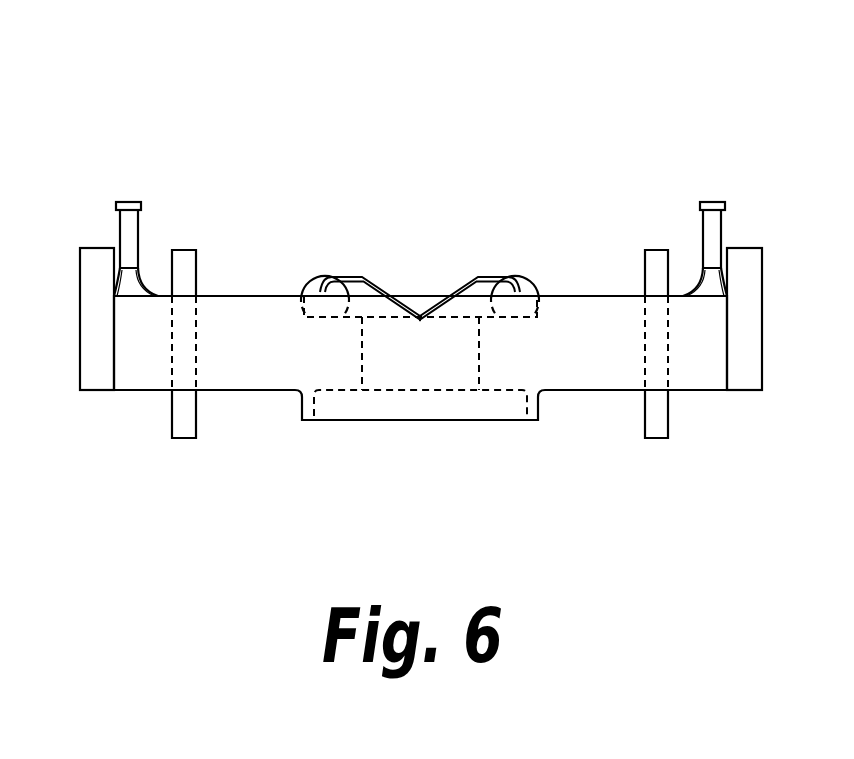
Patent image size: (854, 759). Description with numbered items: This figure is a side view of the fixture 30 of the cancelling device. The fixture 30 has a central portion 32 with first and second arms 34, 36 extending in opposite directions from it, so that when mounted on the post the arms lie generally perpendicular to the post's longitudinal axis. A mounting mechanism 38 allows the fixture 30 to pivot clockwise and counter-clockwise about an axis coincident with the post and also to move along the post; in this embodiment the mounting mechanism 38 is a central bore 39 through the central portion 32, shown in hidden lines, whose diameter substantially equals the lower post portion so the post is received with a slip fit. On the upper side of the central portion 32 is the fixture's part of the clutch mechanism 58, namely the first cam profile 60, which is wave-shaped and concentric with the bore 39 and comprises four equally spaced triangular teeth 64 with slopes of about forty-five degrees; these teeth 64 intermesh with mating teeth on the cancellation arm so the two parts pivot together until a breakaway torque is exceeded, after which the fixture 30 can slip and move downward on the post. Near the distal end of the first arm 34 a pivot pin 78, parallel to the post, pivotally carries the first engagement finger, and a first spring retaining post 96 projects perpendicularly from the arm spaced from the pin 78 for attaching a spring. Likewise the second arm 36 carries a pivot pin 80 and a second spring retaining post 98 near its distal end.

The fixture 30 is at (515, 170).
The central portion 32 is at (300, 412).
The first arm 34 is at (137, 390).
The second arm 36 is at (693, 390).
The mounting mechanism 38 is at (378, 430).
The central bore 39 is at (480, 372).
The clutch mechanism 58 is at (377, 268).
The first cam profile 60 is at (462, 273).
The teeth 64 is at (332, 285).
The pivot pin 78 is at (188, 267).
The pivot pin 80 is at (657, 262).
The first spring retaining post 96 is at (142, 202).
The second spring retaining post 98 is at (698, 202).